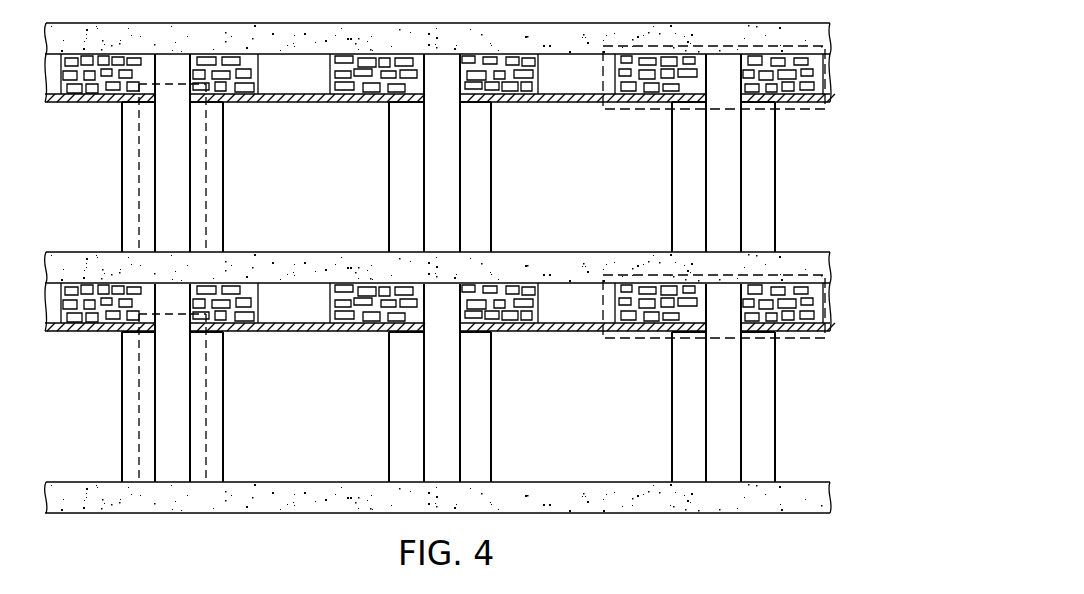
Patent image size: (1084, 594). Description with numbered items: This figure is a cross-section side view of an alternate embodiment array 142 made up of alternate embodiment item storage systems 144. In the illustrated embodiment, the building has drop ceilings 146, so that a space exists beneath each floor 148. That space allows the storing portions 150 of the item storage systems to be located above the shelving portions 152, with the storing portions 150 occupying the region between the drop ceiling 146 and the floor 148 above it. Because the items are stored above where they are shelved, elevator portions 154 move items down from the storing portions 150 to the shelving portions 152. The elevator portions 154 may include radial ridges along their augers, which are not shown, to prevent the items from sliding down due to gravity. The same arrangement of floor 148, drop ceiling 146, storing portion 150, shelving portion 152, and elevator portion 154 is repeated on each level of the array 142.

The array 142 is at (864, 163).
The item storage system 144 is at (492, 199).
The drop ceiling 146 is at (807, 110).
The floor 148 is at (808, 253).
The storing portion 150 is at (635, 110).
The shelving portion 152 is at (492, 148).
The elevator portion 154 is at (207, 145).